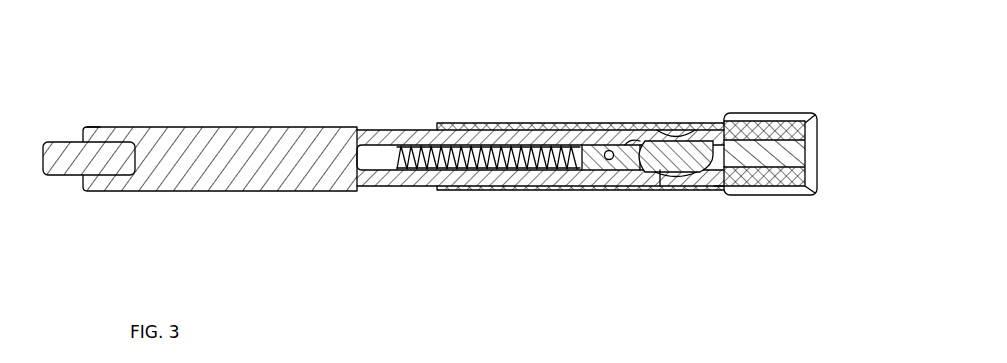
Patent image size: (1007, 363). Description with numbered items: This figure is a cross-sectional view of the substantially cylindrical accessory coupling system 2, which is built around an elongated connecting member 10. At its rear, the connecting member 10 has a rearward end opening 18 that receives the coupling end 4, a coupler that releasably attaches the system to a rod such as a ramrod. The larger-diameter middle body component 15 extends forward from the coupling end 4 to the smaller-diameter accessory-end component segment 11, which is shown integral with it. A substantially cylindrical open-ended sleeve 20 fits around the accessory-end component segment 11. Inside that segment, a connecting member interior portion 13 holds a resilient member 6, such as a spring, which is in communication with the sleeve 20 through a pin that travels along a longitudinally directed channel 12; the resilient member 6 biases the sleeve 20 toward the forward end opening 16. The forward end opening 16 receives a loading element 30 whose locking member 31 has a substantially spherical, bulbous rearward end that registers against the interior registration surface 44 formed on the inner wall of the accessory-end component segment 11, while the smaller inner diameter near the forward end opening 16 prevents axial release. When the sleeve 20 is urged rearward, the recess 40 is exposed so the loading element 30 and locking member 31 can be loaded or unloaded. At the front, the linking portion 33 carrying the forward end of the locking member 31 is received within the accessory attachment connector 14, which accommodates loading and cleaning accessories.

The accessory coupling system 2 is at (220, 161).
The coupling end 4 is at (76, 160).
The resilient member 6 is at (509, 170).
The elongated connecting member 10 is at (527, 149).
The accessory-end component segment 11 is at (540, 145).
The channel 12 is at (524, 148).
The connecting member interior portion 13 is at (381, 158).
The accessory attachment connector 14 is at (770, 162).
The middle body component 15 is at (236, 191).
The forward end opening 16 is at (721, 197).
The rearward end opening 18 is at (78, 128).
The open-ended sleeve 20 is at (614, 140).
The loading element 30 is at (705, 155).
The locking member 31 is at (628, 138).
The linking portion 33 is at (750, 158).
The recess 40 is at (677, 130).
The interior registration surface 44 is at (672, 172).